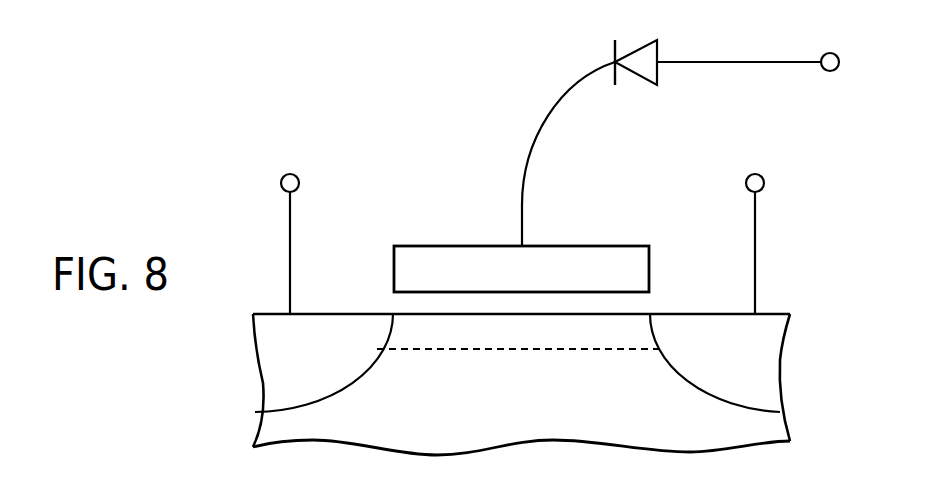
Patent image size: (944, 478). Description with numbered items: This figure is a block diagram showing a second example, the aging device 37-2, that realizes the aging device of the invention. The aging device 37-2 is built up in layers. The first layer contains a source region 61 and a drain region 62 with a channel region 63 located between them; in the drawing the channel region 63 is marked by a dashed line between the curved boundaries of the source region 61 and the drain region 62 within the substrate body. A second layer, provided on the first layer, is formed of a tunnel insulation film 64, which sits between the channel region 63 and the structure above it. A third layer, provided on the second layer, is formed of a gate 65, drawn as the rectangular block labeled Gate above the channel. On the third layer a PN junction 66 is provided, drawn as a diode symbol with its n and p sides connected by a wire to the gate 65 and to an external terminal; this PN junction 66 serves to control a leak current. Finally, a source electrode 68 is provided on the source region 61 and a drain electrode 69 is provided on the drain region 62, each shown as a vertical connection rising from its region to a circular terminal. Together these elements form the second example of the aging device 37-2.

The aging device 37-2 is at (465, 110).
The source region 61 is at (350, 380).
The drain region 62 is at (690, 380).
The channel region 63 is at (579, 352).
The tunnel insulation film 64 is at (635, 300).
The gate 65 is at (650, 252).
The PN junction 66 is at (635, 87).
The source electrode 68 is at (299, 183).
The drain electrode 69 is at (764, 183).